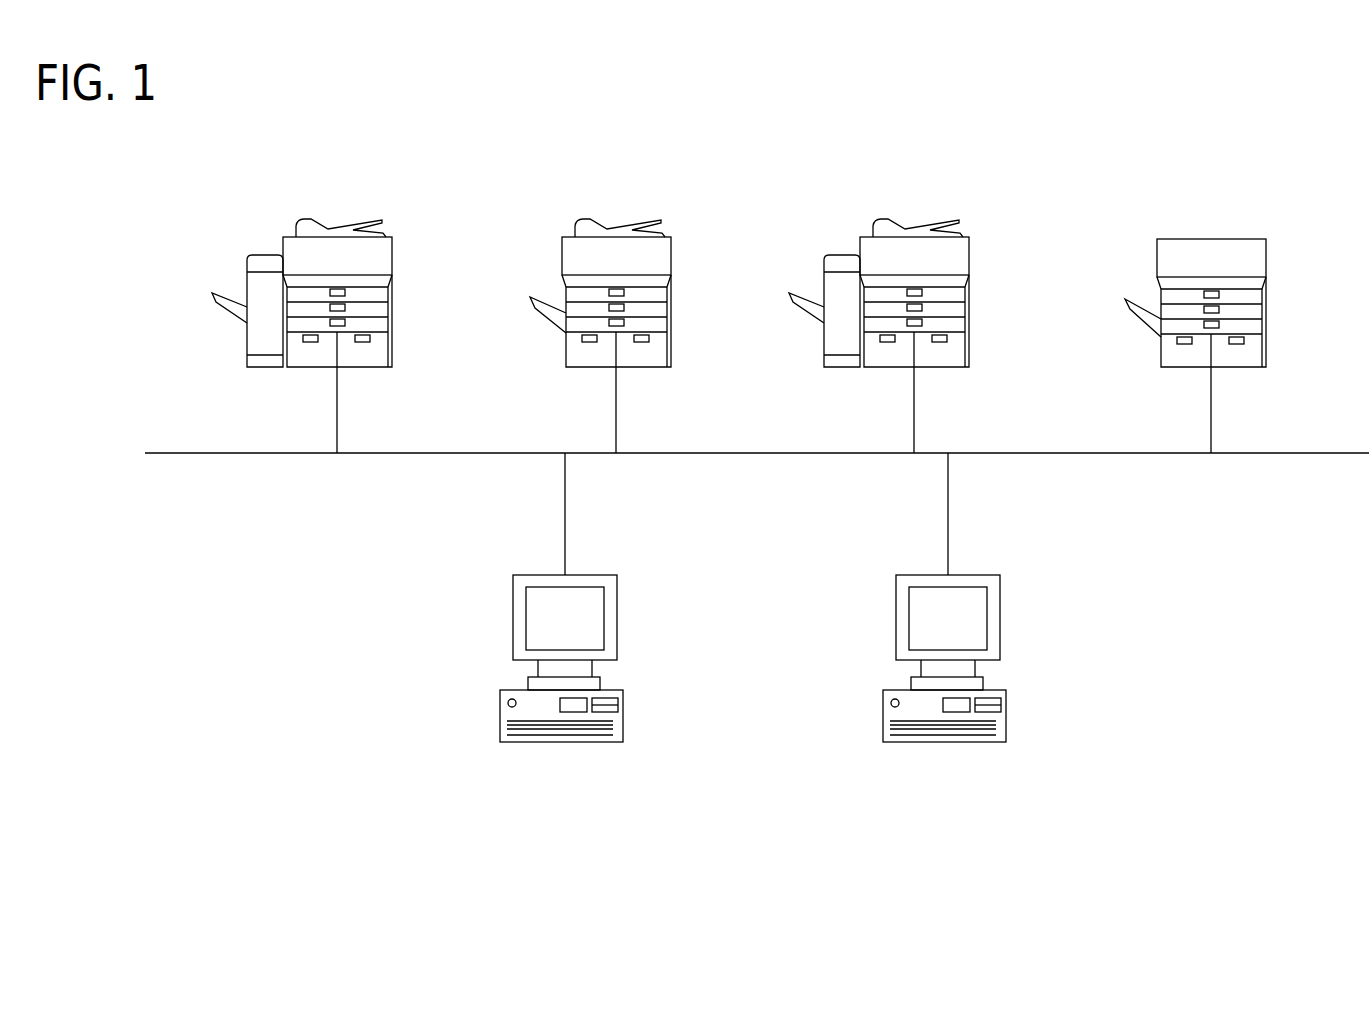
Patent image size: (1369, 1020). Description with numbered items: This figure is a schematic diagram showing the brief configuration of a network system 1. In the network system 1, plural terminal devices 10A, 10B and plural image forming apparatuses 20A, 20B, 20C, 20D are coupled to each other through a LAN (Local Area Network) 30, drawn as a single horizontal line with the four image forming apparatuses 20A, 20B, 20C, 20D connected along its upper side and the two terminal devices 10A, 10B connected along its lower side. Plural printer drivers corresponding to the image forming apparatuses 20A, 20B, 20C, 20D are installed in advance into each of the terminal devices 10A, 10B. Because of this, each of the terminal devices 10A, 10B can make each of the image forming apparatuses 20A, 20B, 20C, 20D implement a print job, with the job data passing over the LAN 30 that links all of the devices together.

The network system 1 is at (1296, 172).
The terminal device 10A is at (560, 742).
The terminal device 10B is at (943, 742).
The image forming apparatus 20A is at (333, 220).
The image forming apparatus 20B is at (613, 220).
The image forming apparatus 20C is at (920, 220).
The image forming apparatus 20D is at (1207, 240).
The LAN (Local Area Network) 30 is at (1270, 455).